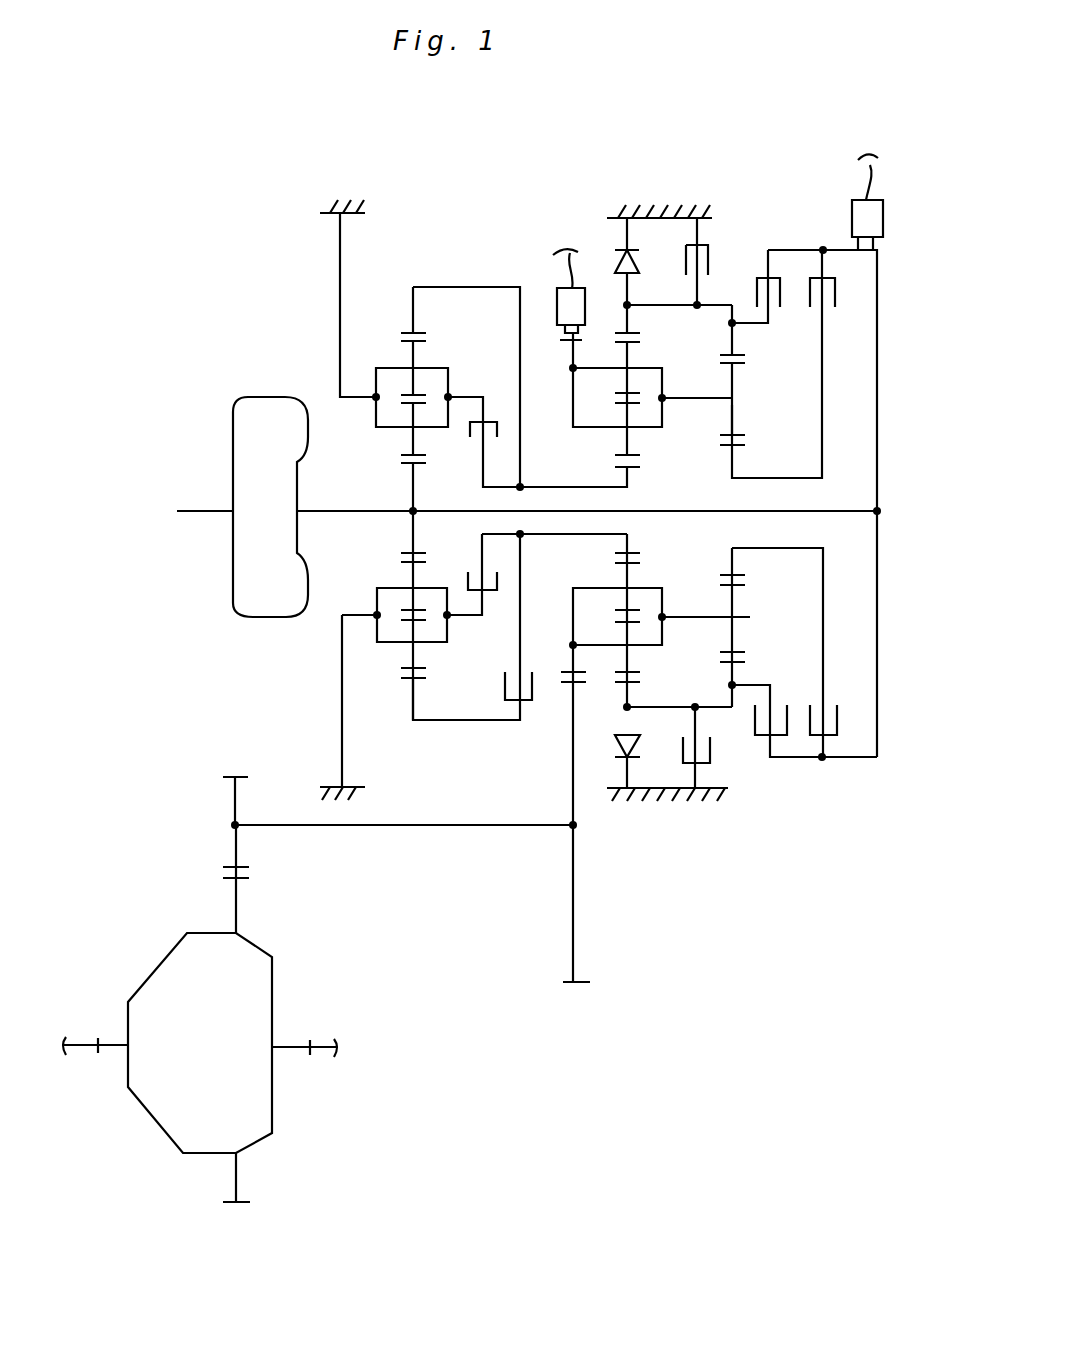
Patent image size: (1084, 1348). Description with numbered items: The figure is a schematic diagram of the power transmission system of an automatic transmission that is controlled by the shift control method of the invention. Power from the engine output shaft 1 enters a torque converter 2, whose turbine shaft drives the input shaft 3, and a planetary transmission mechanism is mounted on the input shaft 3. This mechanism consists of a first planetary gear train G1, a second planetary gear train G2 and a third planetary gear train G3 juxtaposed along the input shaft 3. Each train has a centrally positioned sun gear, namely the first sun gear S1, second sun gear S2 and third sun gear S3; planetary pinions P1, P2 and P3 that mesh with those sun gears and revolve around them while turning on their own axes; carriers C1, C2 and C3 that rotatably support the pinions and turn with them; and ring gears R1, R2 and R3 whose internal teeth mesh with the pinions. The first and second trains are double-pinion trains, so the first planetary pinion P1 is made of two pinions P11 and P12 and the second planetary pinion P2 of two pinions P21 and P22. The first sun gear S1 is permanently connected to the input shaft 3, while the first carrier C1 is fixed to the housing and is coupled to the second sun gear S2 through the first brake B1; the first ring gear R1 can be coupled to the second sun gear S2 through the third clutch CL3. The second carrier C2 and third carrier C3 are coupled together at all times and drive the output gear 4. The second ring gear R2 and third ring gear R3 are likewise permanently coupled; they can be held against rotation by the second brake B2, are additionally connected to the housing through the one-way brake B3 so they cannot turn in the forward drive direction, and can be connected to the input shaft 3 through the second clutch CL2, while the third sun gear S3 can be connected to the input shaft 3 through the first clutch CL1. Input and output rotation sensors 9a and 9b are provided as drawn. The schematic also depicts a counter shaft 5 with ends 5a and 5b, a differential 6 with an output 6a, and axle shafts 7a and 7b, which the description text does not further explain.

The engine output shaft 1 is at (203, 513).
The torque converter 2 is at (236, 597).
The input shaft 3 is at (660, 511).
The output gear 4 is at (571, 350).
The counter shaft 5 is at (437, 825).
The counter shaft end 5a is at (568, 985).
The counter shaft end 5b is at (240, 776).
The differential gear 6 is at (223, 1052).
The differential output 6a is at (248, 1200).
The axle shaft 7a is at (310, 1042).
The axle shaft 7b is at (98, 1040).
The input rotation sensor 9a is at (883, 218).
The output rotation sensor 9b is at (555, 298).
The first planetary gear train G1 is at (421, 240).
The second planetary gear train G2 is at (591, 226).
The third planetary gear train G3 is at (740, 239).
The first ring gear R1 is at (414, 313).
The first carrier C1 is at (393, 367).
The first planetary pinion P1 is at (394, 439).
The first pinion of first planetary pinion P11 is at (418, 438).
The second pinion of first planetary pinion P12 is at (418, 357).
The first sun gear S1 is at (413, 490).
The second ring gear R2 is at (633, 323).
The second carrier C2 is at (572, 395).
The second planetary pinion P2 is at (640, 415).
The first pinion of second planetary pinion P21 is at (623, 444).
The second pinion of second planetary pinion P22 is at (633, 348).
The second sun gear S2 is at (633, 480).
The third ring gear R3 is at (733, 338).
The third carrier C3 is at (738, 377).
The third planetary pinion P3 is at (738, 417).
The third sun gear S3 is at (738, 448).
The first brake B1 is at (505, 583).
The second brake B2 is at (712, 750).
The one-way brake B3 is at (615, 740).
The first clutch CL1 is at (837, 718).
The second clutch CL2 is at (757, 717).
The third clutch CL3 is at (535, 683).